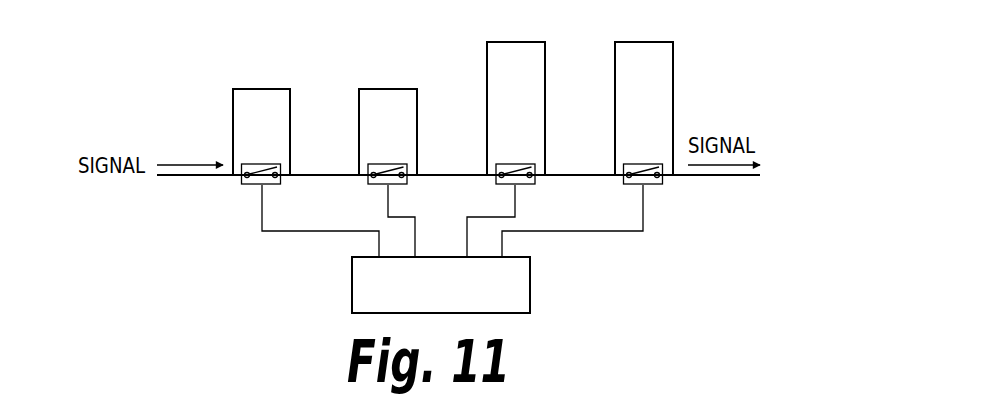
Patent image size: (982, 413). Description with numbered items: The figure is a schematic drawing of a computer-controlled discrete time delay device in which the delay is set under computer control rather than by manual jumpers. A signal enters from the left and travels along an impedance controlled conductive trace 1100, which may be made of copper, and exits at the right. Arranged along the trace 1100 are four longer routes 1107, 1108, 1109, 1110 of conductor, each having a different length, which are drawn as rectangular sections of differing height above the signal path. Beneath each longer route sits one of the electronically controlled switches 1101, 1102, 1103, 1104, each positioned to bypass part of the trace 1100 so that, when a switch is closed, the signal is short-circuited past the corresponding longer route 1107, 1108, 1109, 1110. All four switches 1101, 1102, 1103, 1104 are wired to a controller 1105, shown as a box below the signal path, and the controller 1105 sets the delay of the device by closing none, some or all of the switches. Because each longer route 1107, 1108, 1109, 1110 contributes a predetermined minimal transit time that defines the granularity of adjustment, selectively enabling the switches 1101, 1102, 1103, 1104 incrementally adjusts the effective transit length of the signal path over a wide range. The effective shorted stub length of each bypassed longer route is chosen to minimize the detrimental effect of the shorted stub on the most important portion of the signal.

The impedance controlled conductive trace 1100 is at (296, 81).
The electronically controlled switch 1101 is at (280, 185).
The electronically controlled switch 1102 is at (407, 185).
The electronically controlled switch 1103 is at (535, 185).
The electronically controlled switch 1104 is at (663, 185).
The controller 1105 is at (352, 280).
The longer route 1107 is at (313, 117).
The longer route 1108 is at (439, 117).
The longer route 1109 is at (570, 78).
The longer route 1110 is at (695, 78).